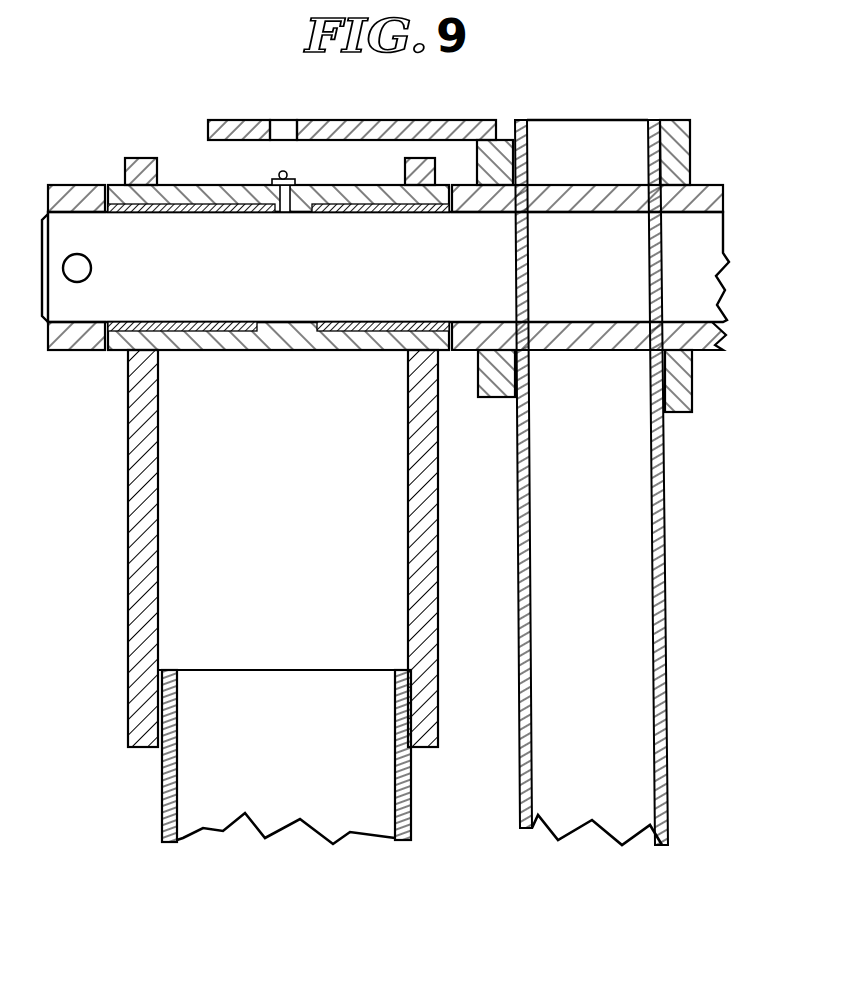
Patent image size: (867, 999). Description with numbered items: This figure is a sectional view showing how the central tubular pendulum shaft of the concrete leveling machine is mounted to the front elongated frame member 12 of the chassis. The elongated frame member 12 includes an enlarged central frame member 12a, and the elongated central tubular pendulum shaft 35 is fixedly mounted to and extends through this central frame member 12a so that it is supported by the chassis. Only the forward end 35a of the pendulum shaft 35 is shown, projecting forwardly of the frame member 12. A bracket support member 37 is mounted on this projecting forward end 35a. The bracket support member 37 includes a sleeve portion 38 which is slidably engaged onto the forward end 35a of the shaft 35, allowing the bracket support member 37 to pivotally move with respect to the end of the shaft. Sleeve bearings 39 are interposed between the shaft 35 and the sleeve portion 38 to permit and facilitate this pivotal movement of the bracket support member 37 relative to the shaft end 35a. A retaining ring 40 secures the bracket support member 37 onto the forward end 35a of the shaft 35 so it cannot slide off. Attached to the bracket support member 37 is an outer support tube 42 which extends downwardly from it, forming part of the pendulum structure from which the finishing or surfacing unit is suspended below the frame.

The elongated frame member 12 is at (503, 148).
The central frame member 12a is at (492, 386).
The central tubular pendulum shaft 35 is at (424, 280).
The forward end of pendulum shaft 35a is at (73, 281).
The bracket support member 37 is at (128, 483).
The sleeve portion 38 is at (283, 346).
The sleeve bearing 39 is at (174, 207).
The retaining ring 40 is at (78, 192).
The outer support tube 42 is at (168, 787).